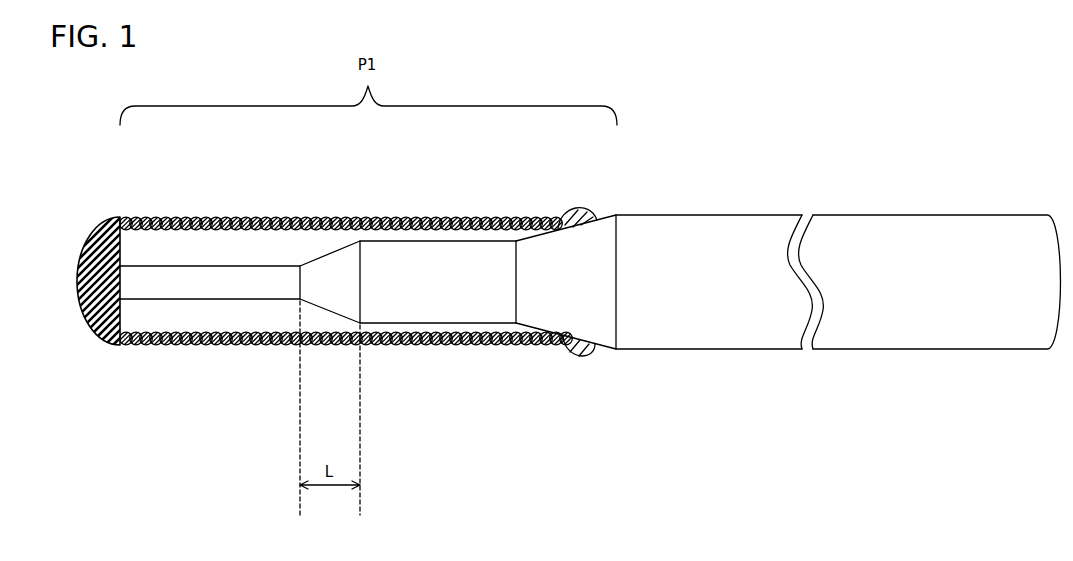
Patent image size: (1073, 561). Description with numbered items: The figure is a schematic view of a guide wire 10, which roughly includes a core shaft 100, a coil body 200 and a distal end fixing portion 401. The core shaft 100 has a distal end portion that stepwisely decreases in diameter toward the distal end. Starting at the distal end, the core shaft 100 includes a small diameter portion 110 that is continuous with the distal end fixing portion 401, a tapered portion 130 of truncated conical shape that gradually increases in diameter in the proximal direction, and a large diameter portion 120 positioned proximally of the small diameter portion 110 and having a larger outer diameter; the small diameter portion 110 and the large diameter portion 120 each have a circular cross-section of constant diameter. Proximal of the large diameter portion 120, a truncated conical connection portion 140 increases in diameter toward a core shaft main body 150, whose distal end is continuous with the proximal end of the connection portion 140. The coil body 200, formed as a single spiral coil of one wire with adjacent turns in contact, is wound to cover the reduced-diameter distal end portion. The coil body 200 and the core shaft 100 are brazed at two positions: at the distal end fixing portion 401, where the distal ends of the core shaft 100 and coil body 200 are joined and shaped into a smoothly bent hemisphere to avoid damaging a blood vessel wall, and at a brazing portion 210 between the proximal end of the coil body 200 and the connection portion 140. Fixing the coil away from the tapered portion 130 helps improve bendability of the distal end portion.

The guide wire 10 is at (919, 188).
The core shaft 100 is at (679, 206).
The small diameter portion 110 is at (193, 278).
The large diameter portion 120 is at (468, 298).
The tapered portion 130 is at (345, 292).
The connection portion 140 is at (590, 312).
The core shaft main body 150 is at (733, 320).
The coil body 200 is at (324, 213).
The brazing portion 210 is at (582, 212).
The distal end fixing portion 401 is at (97, 323).